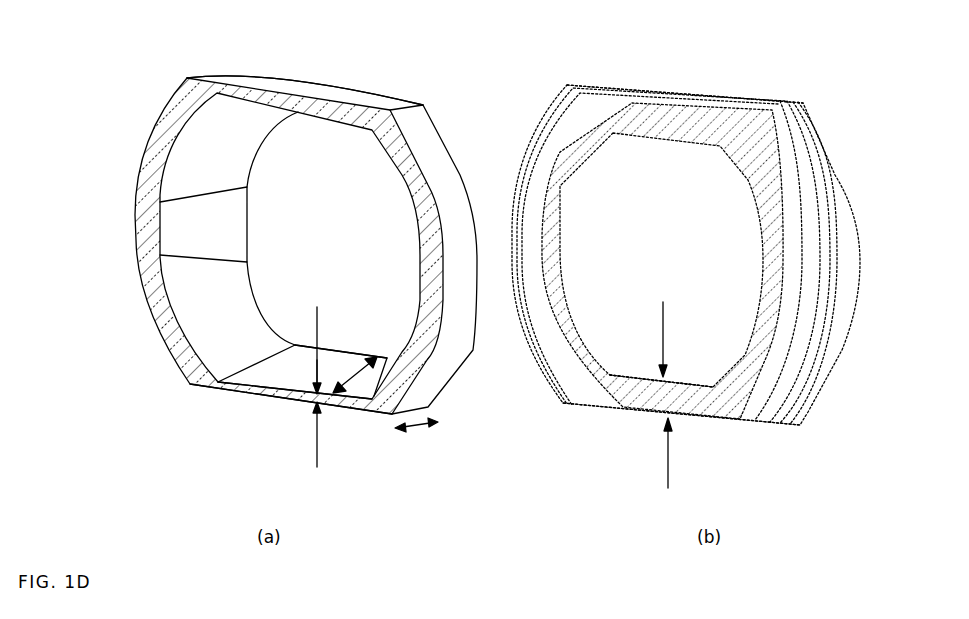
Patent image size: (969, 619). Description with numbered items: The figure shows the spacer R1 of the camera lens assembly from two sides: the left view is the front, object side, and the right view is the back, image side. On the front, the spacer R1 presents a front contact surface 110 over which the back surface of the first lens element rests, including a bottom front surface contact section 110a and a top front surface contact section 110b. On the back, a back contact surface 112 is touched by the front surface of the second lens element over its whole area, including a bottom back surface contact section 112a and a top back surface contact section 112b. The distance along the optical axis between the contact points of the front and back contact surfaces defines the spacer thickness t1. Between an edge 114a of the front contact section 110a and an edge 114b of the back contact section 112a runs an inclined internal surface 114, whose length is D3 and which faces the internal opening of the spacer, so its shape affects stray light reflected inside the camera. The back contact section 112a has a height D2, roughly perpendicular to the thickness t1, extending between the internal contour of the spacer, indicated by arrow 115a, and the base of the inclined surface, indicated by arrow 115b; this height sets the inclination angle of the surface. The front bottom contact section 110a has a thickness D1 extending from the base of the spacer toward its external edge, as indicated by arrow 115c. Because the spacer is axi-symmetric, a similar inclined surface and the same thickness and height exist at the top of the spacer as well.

The spacer R1 is at (467, 29).
The front contact surface 110 is at (137, 219).
The bottom front surface contact section 110a is at (267, 392).
The top front surface contact section 110b is at (243, 97).
The internal surface 114 is at (322, 397).
The edge of front contact section 114a is at (262, 380).
The edge of back contact section 114b is at (367, 350).
The arrow 115c is at (314, 397).
The thickness of front bottom contact section D1 is at (300, 385).
The length of internal surface D3 is at (358, 377).
The spacer thickness t1 is at (433, 431).
The back contact surface 112 is at (777, 262).
The bottom back surface contact section 112a is at (678, 412).
The top back surface contact section 112b is at (682, 125).
The arrow 115a is at (671, 329).
The arrow 115b is at (668, 468).
The height of back contact section D2 is at (661, 392).